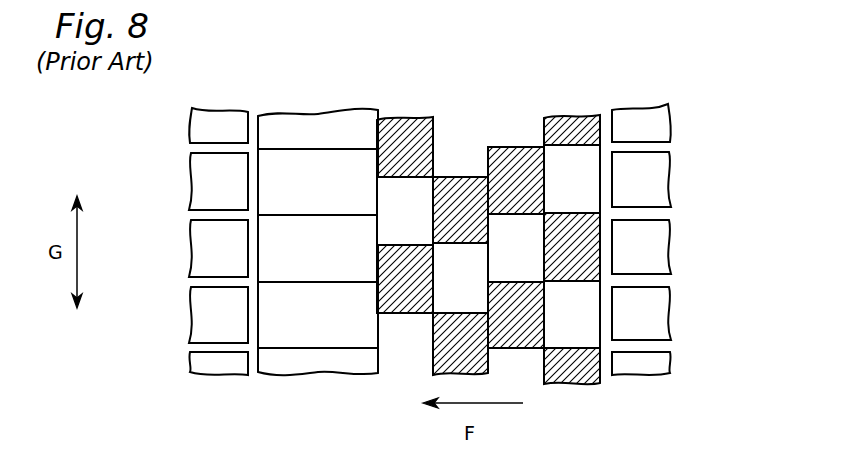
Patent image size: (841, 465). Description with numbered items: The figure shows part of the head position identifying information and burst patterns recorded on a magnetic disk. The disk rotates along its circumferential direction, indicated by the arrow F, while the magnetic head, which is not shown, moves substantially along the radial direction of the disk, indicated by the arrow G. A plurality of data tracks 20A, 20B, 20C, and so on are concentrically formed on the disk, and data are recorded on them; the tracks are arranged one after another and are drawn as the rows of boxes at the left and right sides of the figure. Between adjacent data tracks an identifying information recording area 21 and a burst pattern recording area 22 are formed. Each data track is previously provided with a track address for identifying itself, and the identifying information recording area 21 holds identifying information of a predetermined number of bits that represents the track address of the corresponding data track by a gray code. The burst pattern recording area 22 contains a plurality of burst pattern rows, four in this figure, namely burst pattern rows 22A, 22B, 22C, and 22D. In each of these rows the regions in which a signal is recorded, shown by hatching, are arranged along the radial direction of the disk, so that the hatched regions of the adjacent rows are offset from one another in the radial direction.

The data track 20A is at (190, 182).
The data track 20B is at (190, 246).
The data track 20C is at (190, 311).
The identifying information recording area 21 is at (375, 64).
The burst pattern recording area 22 is at (488, 208).
The burst pattern row 22A is at (437, 96).
The burst pattern row 22B is at (492, 96).
The burst pattern row 22C is at (548, 96).
The burst pattern row 22D is at (572, 228).